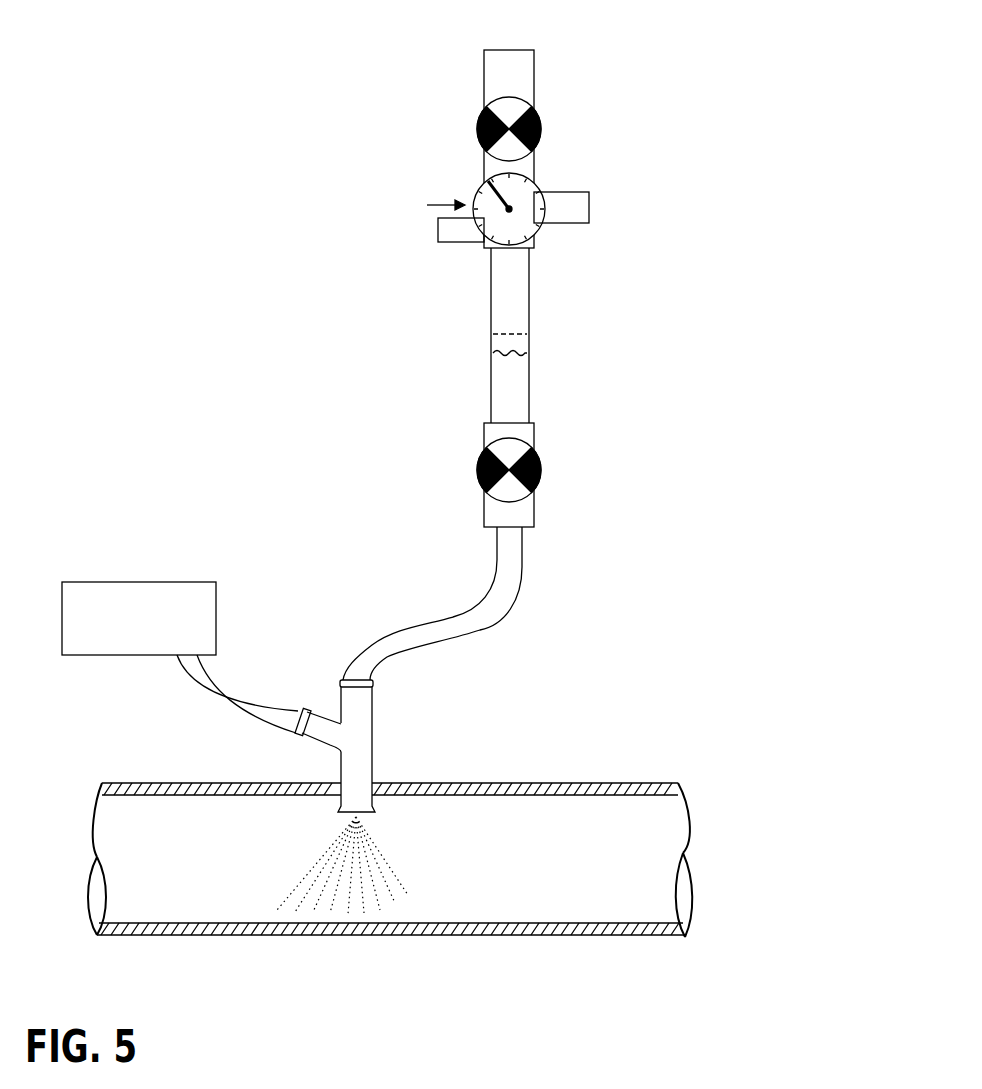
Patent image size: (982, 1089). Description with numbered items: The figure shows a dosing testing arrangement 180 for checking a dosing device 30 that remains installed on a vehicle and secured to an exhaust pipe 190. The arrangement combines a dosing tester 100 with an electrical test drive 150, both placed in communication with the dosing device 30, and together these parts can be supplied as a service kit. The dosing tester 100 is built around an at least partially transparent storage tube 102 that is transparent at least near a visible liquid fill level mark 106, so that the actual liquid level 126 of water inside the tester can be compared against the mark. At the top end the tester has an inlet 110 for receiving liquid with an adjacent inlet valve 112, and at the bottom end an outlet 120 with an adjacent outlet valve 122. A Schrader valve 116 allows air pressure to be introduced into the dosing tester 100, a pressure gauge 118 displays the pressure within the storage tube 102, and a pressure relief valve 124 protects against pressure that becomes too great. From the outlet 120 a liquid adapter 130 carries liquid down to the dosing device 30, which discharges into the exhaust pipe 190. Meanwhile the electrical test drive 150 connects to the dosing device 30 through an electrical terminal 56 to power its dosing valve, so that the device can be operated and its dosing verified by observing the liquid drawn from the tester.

The dosing device 30 is at (377, 722).
The electrical terminal 56 is at (213, 697).
The dosing tester 100 is at (491, 318).
The storage tube 102 is at (532, 277).
The liquid fill level mark 106 is at (513, 330).
The inlet 110 is at (513, 50).
The inlet valve 112 is at (543, 129).
The Schrader valve 116 is at (580, 192).
The pressure gauge 118 is at (487, 182).
The outlet 120 is at (523, 535).
The outlet valve 122 is at (543, 472).
The pressure relief valve 124 is at (439, 232).
The actual liquid level 126 is at (518, 346).
The liquid adapter 130 is at (500, 616).
The electrical test drive 150 is at (93, 582).
The dosing testing arrangement 180 is at (149, 505).
The exhaust pipe 190 is at (565, 787).